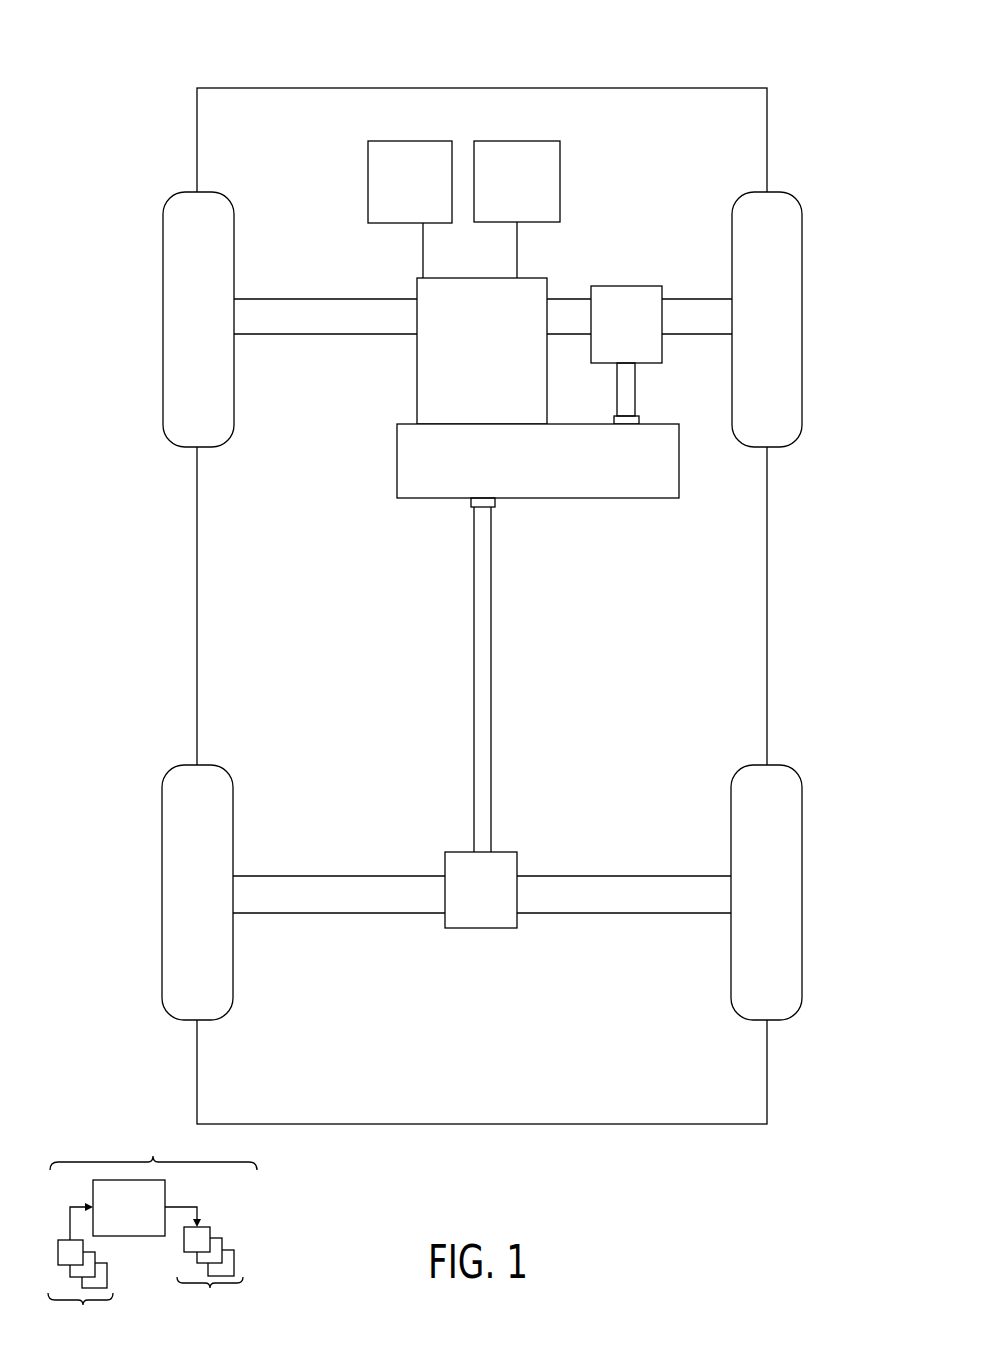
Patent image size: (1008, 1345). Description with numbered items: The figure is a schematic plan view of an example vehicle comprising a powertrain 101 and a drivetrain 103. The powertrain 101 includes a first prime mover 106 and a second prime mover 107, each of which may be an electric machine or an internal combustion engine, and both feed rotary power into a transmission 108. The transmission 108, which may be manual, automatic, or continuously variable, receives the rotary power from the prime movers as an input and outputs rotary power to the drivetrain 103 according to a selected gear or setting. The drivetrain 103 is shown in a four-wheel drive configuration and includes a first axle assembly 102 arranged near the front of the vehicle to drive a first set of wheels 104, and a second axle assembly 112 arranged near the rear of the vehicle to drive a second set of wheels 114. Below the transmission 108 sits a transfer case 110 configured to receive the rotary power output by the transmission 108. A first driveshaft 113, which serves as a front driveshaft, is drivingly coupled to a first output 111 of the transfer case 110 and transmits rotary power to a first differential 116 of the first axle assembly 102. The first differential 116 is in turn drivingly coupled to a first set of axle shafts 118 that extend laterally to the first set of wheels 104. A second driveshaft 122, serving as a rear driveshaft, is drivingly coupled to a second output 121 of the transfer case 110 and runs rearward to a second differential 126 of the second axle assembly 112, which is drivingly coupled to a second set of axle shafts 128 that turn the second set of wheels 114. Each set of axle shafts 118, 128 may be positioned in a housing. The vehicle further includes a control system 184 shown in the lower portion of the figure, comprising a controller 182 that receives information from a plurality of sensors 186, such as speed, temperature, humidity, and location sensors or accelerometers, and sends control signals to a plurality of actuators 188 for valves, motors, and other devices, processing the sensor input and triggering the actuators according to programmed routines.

The powertrain 101 is at (594, 153).
The first axle assembly 102 is at (639, 325).
The drivetrain 103 is at (326, 316).
The first set of wheels 104 is at (170, 201).
The first prime mover 106 is at (425, 191).
The second prime mover 107 is at (532, 191).
The transmission 108 is at (497, 360).
The transfer case 110 is at (553, 471).
The first output 111 is at (641, 420).
The second axle assembly 112 is at (482, 713).
The first driveshaft 113 is at (637, 402).
The second set of wheels 114 is at (172, 769).
The first differential 116 is at (641, 335).
The first set of axle shafts 118 is at (298, 297).
The second output 121 is at (497, 501).
The second driveshaft 122 is at (491, 711).
The second differential 126 is at (496, 901).
The second set of axle shafts 128 is at (656, 874).
The controller 182 is at (129, 1208).
The control system 184 is at (152, 1232).
The plurality of sensors 186 is at (80, 1269).
The plurality of actuators 188 is at (204, 1263).